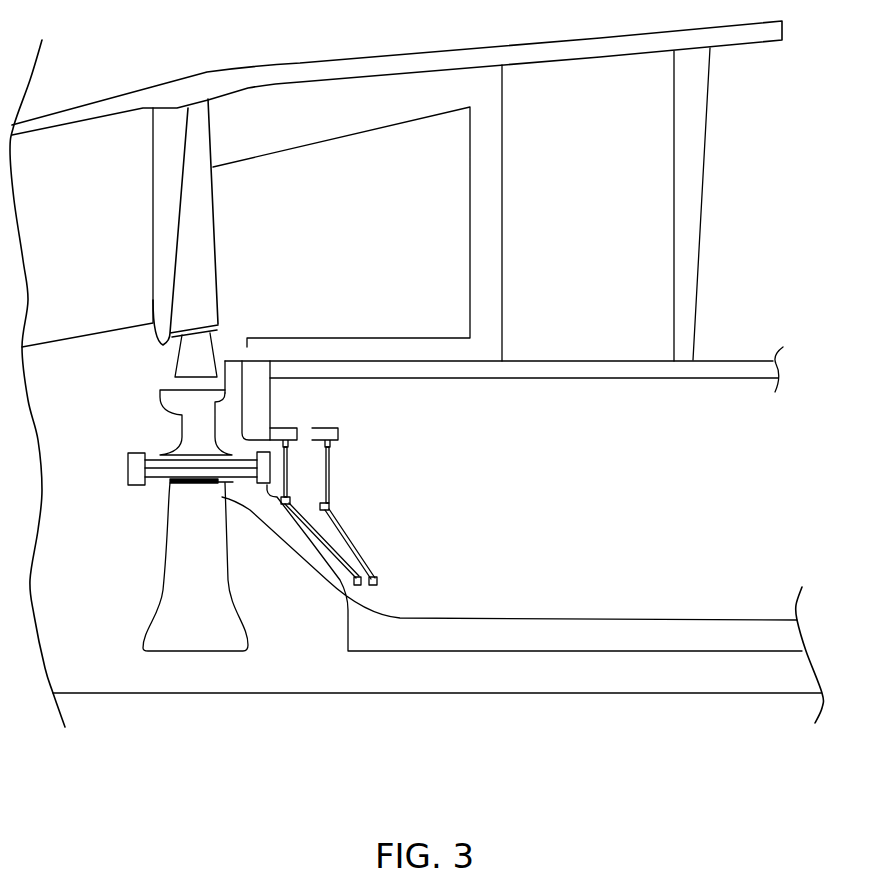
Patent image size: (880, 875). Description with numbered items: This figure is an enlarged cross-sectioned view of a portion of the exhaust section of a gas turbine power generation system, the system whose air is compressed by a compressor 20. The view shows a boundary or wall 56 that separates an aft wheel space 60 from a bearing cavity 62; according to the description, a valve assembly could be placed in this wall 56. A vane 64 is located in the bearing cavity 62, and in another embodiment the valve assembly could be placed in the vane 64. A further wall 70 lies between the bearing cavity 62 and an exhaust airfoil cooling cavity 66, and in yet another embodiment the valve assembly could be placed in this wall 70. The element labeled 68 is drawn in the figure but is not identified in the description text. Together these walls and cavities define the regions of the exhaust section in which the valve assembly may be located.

The compressor 20 is at (617, 735).
The wall 56 is at (252, 417).
The aft wheel space 60 is at (228, 437).
The bearing cavity 62 is at (607, 462).
The vane 64 is at (350, 542).
The exhaust airfoil cooling cavity 66 is at (485, 352).
The strut 68 is at (648, 157).
The wall 70 is at (440, 370).